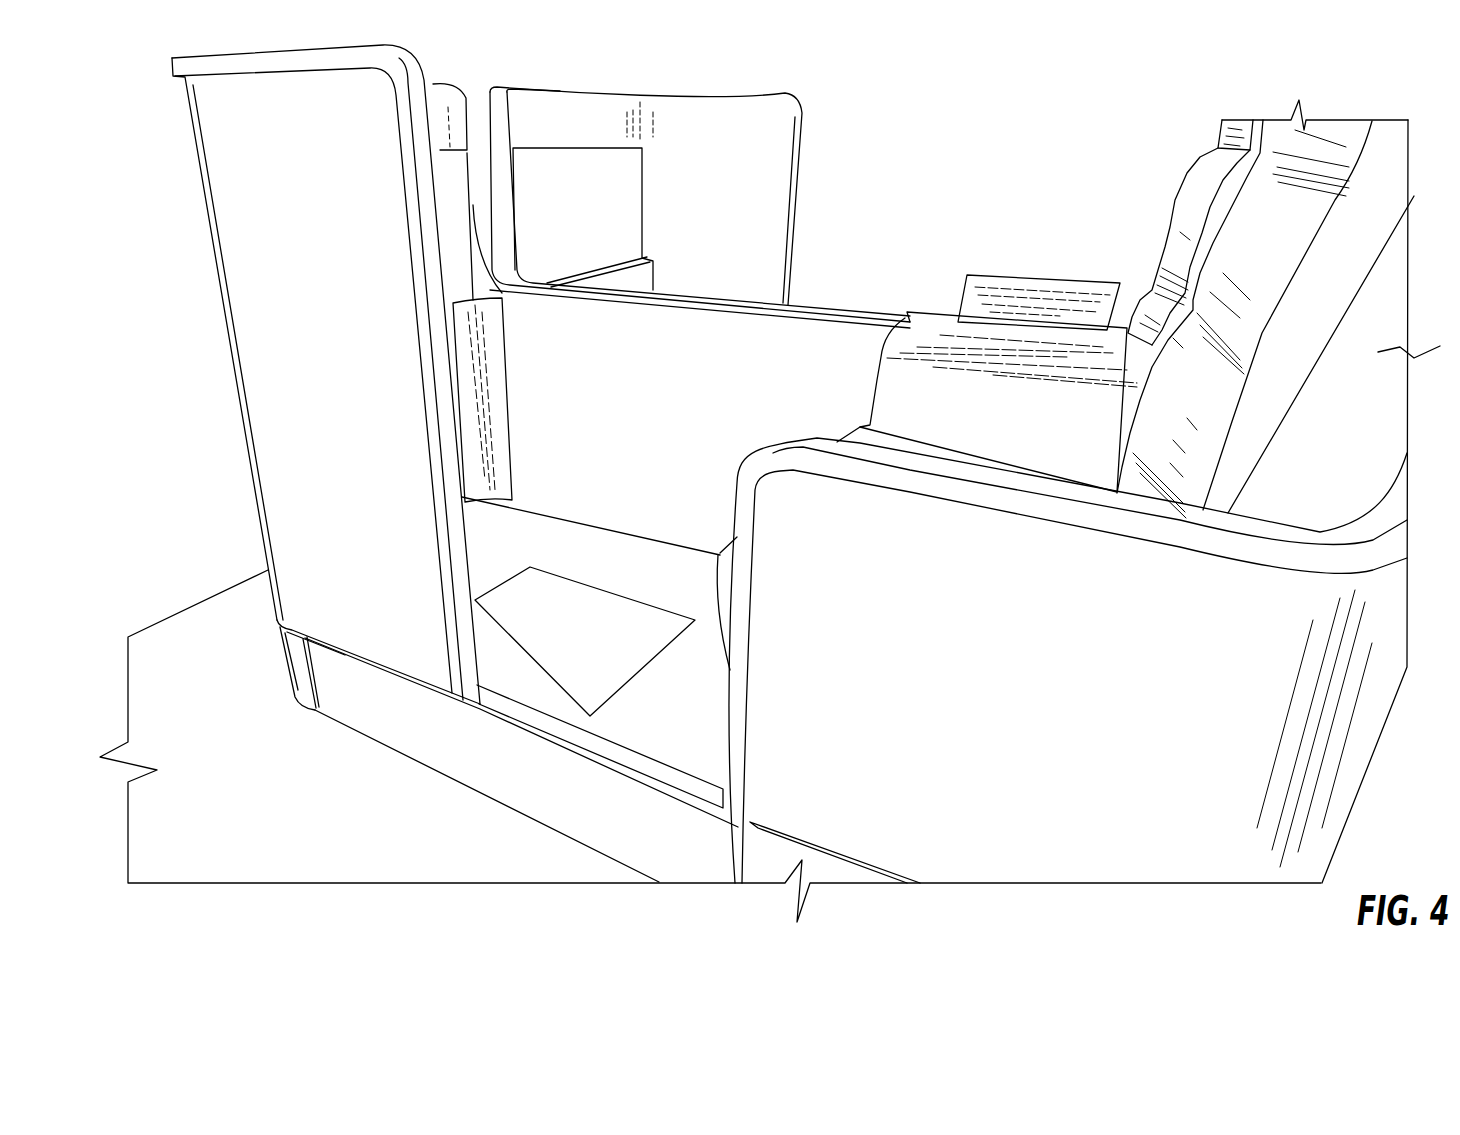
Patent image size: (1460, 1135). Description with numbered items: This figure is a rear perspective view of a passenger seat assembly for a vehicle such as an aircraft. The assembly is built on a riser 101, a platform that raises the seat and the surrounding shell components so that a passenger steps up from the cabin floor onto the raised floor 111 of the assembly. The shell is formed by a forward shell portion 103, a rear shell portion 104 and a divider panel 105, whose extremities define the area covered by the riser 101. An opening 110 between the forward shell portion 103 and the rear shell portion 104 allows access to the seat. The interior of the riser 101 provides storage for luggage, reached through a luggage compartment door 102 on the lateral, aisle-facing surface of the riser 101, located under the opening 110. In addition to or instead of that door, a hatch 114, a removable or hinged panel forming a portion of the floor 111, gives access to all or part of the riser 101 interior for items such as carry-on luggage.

The riser 101 is at (373, 718).
The luggage compartment door 102 is at (700, 860).
The forward shell portion 103 is at (294, 333).
The rear shell portion 104 is at (862, 607).
The divider panel 105 is at (614, 408).
The opening 110 is at (626, 718).
The floor 111 is at (674, 748).
The hatch 114 is at (544, 658).